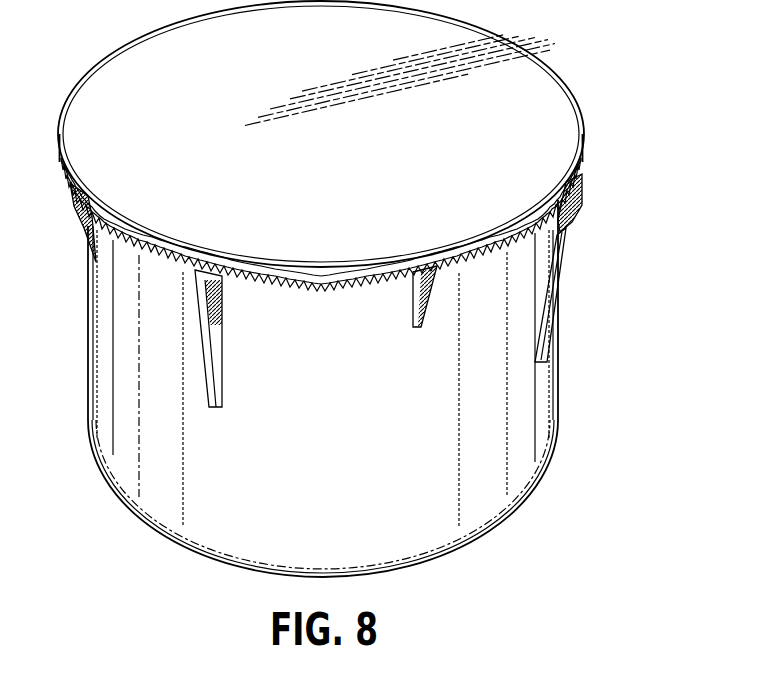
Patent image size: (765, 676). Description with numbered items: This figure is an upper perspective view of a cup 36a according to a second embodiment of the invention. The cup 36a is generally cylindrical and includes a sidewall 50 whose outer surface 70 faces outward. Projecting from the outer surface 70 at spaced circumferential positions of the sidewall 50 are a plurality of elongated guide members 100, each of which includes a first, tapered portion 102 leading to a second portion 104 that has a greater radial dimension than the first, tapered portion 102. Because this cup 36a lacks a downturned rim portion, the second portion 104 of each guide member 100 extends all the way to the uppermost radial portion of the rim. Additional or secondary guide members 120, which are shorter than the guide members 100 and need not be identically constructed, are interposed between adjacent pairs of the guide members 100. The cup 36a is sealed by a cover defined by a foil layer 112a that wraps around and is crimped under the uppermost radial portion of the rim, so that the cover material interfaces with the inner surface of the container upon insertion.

The cup 36a is at (611, 57).
The foil layer 112a is at (130, 80).
The outer surface 70 is at (398, 462).
The sidewall 50 is at (125, 465).
The guide member 100 is at (220, 293).
The secondary guide member 120 is at (88, 229).
The first tapered portion 102 is at (547, 330).
The second portion 104 is at (565, 245).